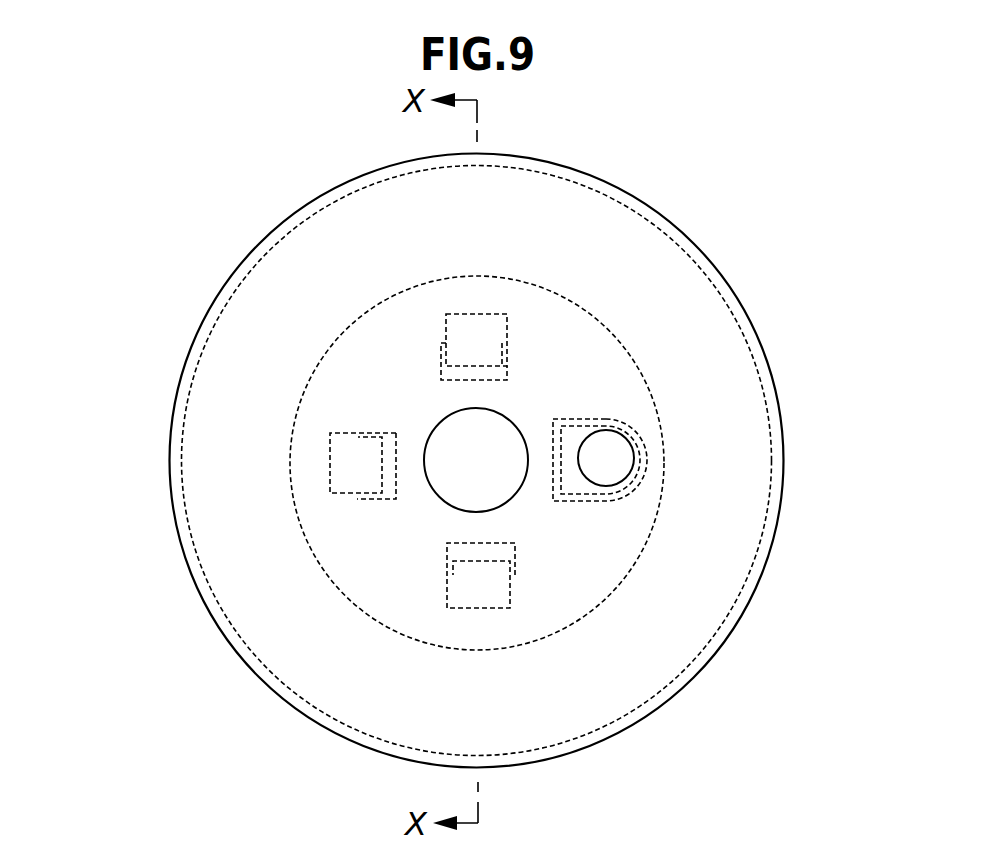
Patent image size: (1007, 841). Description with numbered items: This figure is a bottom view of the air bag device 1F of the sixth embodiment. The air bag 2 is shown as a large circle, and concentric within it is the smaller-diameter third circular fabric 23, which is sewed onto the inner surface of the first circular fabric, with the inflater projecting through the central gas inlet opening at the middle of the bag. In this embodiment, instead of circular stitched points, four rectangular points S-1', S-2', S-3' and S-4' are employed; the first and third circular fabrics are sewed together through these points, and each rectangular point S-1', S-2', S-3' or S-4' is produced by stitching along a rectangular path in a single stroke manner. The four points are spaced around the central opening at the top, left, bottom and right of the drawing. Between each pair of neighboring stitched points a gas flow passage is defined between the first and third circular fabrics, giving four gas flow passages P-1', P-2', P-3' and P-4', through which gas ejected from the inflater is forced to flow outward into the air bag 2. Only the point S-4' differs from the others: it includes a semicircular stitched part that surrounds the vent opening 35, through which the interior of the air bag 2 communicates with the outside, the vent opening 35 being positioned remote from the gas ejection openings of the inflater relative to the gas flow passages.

The air bag device 1F is at (802, 167).
The air bag 2 is at (657, 199).
The third circular fabric 23 is at (713, 208).
The vent opening 35 is at (607, 431).
The rectangular point S-1' is at (546, 244).
The rectangular point S-2' is at (237, 425).
The rectangular point S-3' is at (355, 660).
The rectangular point S-4' is at (697, 540).
The gas flow passage P-1' is at (320, 269).
The gas flow passage P-2' is at (253, 573).
The gas flow passage P-3' is at (650, 648).
The gas flow passage P-4' is at (690, 316).